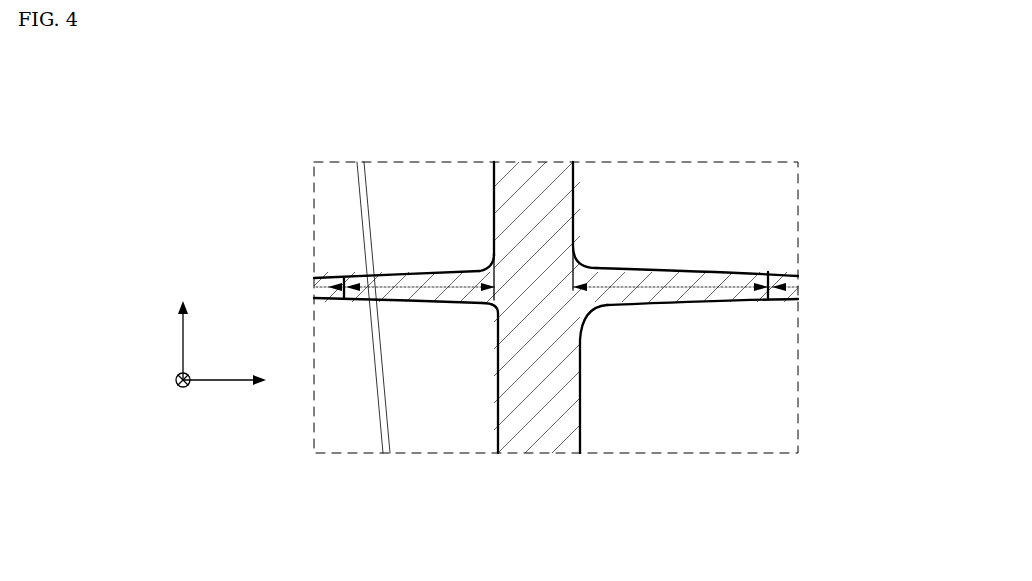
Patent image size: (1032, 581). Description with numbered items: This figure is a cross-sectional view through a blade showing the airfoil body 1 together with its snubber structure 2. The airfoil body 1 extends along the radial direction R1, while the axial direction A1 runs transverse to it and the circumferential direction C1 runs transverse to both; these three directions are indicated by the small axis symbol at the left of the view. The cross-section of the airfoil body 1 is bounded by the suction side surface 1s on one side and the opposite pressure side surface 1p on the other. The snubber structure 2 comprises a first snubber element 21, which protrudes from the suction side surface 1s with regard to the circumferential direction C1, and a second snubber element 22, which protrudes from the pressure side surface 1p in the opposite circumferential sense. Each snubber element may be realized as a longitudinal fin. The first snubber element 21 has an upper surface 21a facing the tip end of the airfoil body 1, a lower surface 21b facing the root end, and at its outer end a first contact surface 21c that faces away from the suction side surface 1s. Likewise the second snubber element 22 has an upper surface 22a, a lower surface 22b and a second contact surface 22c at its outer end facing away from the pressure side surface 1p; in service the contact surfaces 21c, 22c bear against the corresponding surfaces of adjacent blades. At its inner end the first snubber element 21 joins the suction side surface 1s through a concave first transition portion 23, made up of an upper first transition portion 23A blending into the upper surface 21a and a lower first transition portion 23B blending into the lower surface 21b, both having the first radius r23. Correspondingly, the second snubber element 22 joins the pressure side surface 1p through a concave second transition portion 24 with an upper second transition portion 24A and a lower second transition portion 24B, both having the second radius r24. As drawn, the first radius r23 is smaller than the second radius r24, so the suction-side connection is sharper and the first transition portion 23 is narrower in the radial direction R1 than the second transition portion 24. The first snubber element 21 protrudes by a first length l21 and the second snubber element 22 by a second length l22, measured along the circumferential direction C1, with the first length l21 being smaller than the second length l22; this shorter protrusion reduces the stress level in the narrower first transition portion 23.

The airfoil body 1 is at (535, 260).
The suction side surface 1s is at (493, 200).
The pressure side surface 1p is at (584, 188).
The snubber structure 2 is at (380, 198).
The first snubber element 21 is at (571, 304).
The upper surface of the first snubber element 21a is at (362, 277).
The lower surface of the first snubber element 21b is at (423, 303).
The first contact surface 21c is at (316, 284).
The second snubber element 22 is at (318, 297).
The upper surface of the second snubber element 22a is at (765, 272).
The lower surface of the second snubber element 22b is at (730, 298).
The second contact surface 22c is at (799, 278).
The first transition portion 23 is at (484, 314).
The upper first transition portion 23A is at (492, 262).
The lower first transition portion 23B is at (500, 318).
The second transition portion 24 is at (681, 313).
The upper second transition portion 24A is at (587, 257).
The lower second transition portion 24B is at (593, 332).
The first radius r23 is at (490, 314).
The second radius r24 is at (588, 257).
The first length l21 is at (367, 330).
The second length l22 is at (695, 298).
The radial direction R1 is at (181, 336).
The axial direction A1 is at (176, 382).
The circumferential direction C1 is at (214, 384).